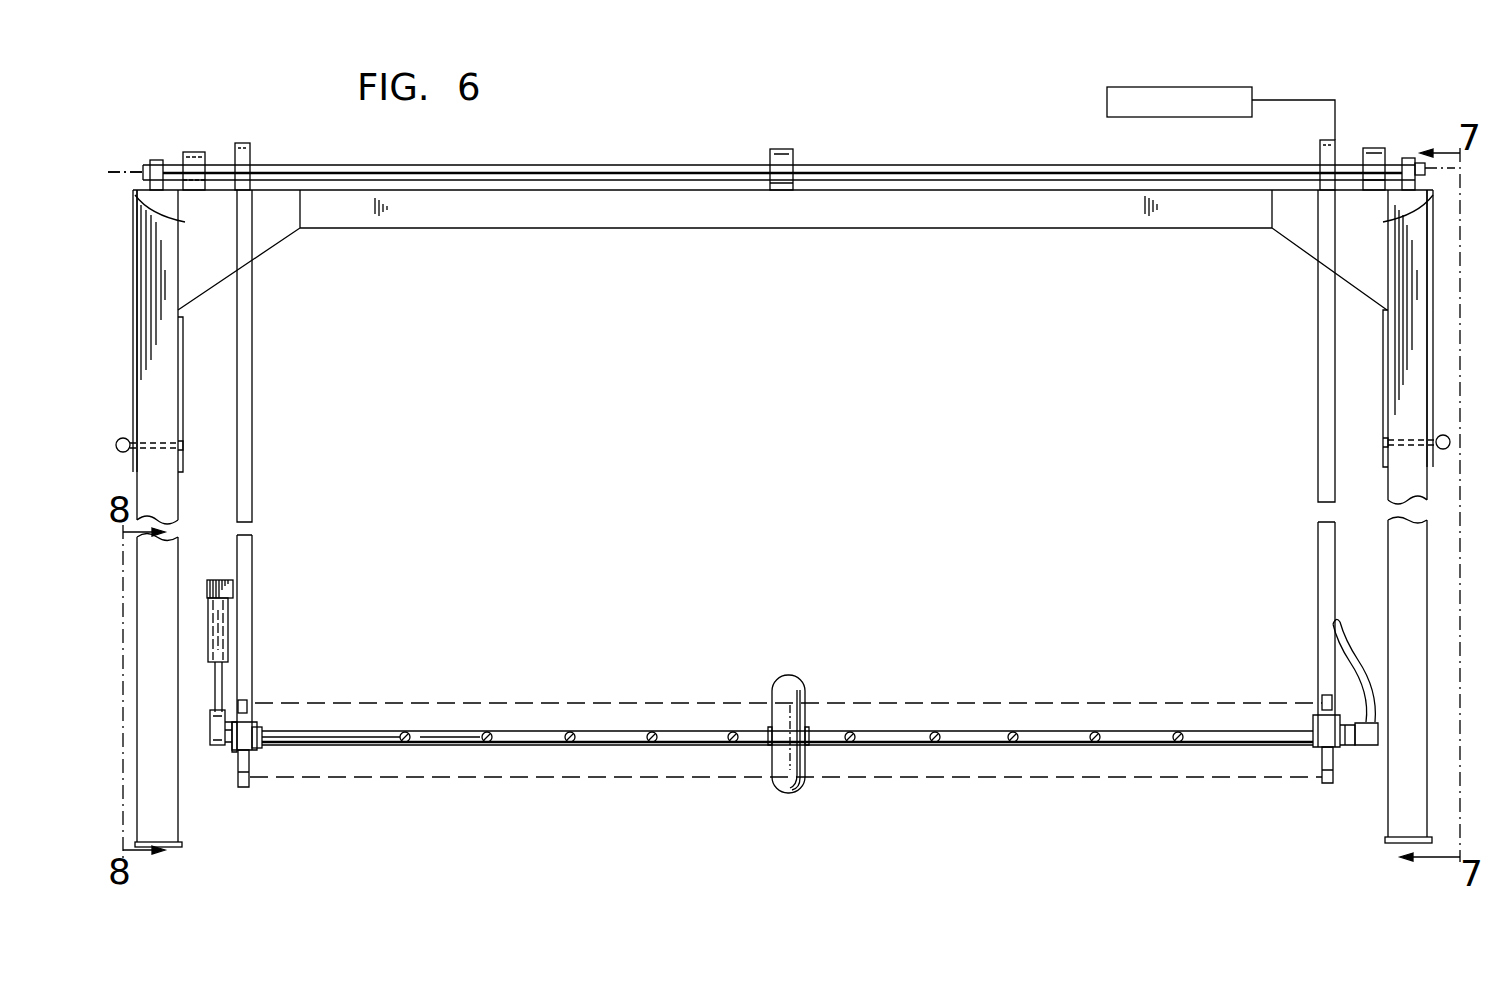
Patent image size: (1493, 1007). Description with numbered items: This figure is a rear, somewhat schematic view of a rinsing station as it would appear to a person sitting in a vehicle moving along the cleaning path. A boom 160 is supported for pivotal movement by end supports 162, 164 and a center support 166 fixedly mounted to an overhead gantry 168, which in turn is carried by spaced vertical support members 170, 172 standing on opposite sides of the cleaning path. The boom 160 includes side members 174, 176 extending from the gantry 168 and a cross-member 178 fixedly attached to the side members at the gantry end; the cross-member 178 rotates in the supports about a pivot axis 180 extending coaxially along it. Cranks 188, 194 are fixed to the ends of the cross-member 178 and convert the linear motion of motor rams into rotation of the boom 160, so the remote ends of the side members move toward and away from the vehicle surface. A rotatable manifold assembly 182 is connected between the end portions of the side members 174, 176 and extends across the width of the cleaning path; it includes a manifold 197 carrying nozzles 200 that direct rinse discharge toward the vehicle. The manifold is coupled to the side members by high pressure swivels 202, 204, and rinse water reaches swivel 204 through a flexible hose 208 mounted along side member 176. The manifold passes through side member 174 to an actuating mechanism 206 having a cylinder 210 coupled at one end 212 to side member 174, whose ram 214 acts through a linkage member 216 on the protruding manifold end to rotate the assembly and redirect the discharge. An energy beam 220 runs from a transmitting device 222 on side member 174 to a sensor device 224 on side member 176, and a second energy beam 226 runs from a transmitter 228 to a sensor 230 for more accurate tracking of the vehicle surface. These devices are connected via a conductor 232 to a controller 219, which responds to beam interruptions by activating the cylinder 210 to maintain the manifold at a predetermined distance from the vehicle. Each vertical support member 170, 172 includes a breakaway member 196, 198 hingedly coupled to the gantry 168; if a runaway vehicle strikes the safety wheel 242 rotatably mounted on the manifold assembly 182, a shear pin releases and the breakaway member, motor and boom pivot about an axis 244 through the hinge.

The boom 160 is at (993, 155).
The end support 162 is at (198, 152).
The end support 164 is at (1378, 148).
The center support 166 is at (785, 150).
The overhead gantry 168 is at (1072, 212).
The vertical support member 170 is at (170, 495).
The vertical support member 172 is at (1390, 490).
The side member 174 is at (252, 395).
The side member 176 is at (1318, 385).
The cross-member 178 is at (588, 166).
The pivot axis 180 is at (128, 172).
The rotatable manifold assembly 182 is at (885, 680).
The crank 188 is at (1409, 158).
The crank 194 is at (158, 160).
The breakaway member 196 is at (133, 345).
The manifold 197 is at (522, 745).
The breakaway member 198 is at (1433, 350).
The nozzles 200 is at (485, 742).
The high pressure swivel 202 is at (260, 724).
The high pressure swivel 204 is at (1313, 728).
The actuating mechanism 206 is at (196, 674).
The flexible hose 208 is at (1352, 640).
The cylinder 210 is at (220, 632).
The end 212 is at (210, 582).
The ram 214 is at (220, 690).
The linkage member 216 is at (210, 722).
The controller 219 is at (1183, 87).
The energy beam 220 is at (664, 688).
The transmitting device 222 is at (248, 705).
The sensor device 224 is at (1322, 700).
The second energy beam 226 is at (748, 785).
The transmitter 228 is at (250, 786).
The sensor 230 is at (1322, 783).
The conductor 232 is at (1270, 100).
The safety wheel 242 is at (800, 675).
The axis 244 is at (784, 215).